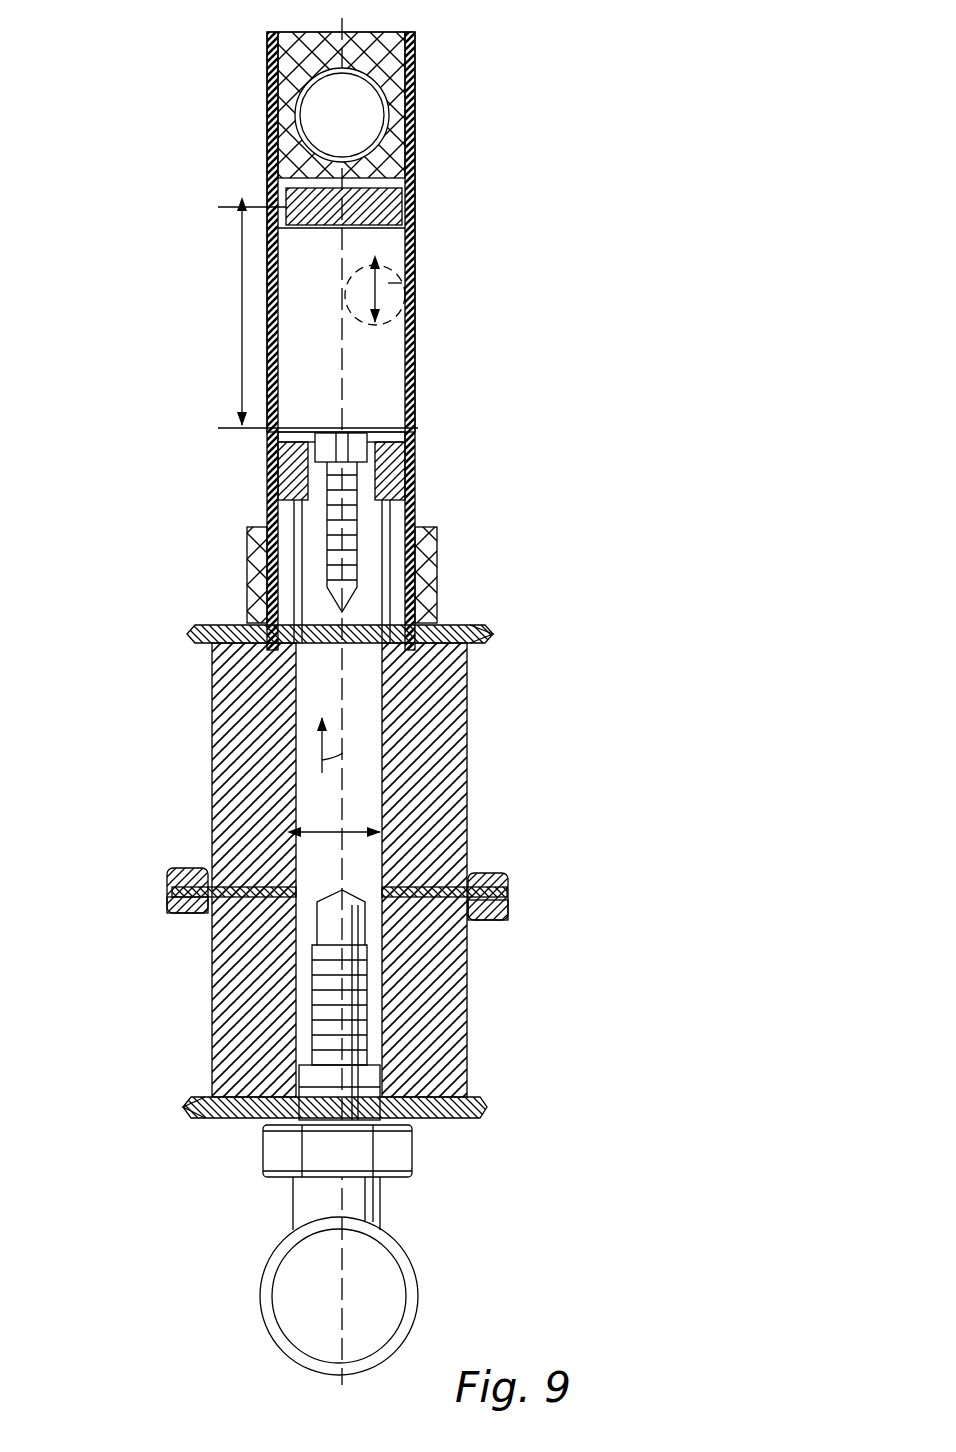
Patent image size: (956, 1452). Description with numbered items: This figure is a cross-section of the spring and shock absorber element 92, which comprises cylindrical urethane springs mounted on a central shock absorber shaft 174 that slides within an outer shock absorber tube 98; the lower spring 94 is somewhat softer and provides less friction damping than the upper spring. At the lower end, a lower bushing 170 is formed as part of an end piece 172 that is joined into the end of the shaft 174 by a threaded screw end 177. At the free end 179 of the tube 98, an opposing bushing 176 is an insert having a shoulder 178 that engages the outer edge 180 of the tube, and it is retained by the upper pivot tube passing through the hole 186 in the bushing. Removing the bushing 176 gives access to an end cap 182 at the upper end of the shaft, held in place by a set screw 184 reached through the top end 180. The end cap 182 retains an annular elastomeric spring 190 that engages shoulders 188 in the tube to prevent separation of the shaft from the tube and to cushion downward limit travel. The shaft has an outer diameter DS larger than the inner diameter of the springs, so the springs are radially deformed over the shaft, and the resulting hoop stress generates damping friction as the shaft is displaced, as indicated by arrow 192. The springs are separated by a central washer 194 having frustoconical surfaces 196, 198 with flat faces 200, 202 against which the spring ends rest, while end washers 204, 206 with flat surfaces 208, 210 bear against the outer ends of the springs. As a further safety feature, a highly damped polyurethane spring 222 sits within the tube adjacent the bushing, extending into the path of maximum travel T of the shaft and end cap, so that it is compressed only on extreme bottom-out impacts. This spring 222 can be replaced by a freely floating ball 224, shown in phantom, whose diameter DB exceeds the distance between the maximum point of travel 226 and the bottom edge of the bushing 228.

The spring and shock absorber element 92 is at (418, 870).
The cylindrical urethane spring 94 is at (472, 966).
The outer shock absorber tube 98 is at (415, 487).
The lower bushing 170 is at (409, 1285).
The end piece 172 is at (384, 1207).
The shock absorber shaft 174 is at (370, 1032).
The bushing 176 is at (413, 107).
The threaded screw end 177 is at (372, 1067).
The shoulder 178 is at (412, 34).
The free end 179 is at (264, 62).
The outer edge 180 is at (420, 51).
The end cap 182 is at (416, 432).
The set screw 184 is at (406, 470).
The hole 186 is at (311, 129).
The shoulders 188 is at (406, 518).
The annular elastomeric spring 190 is at (406, 444).
The arrow 192 is at (430, 713).
The central washer 194 is at (510, 901).
The frustoconical surface 196 is at (481, 868).
The frustoconical surface 198 is at (488, 924).
The flat face 200 is at (202, 868).
The flat face 202 is at (200, 913).
The end washer 204 is at (496, 634).
The end washer 206 is at (490, 1107).
The flat surface 208 is at (470, 648).
The flat surface 210 is at (212, 1083).
The spring 222 is at (413, 222).
The freely floating ball 224 is at (413, 280).
The maximum point of travel 226 is at (223, 208).
The bottom edge of the bushing 228 is at (413, 205).
The maximum travel T is at (242, 324).
The ball diameter DB is at (379, 299).
The shaft outer diameter DS is at (348, 830).